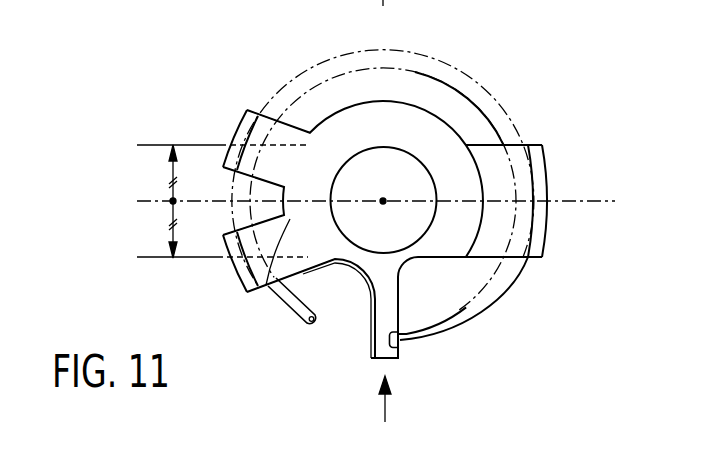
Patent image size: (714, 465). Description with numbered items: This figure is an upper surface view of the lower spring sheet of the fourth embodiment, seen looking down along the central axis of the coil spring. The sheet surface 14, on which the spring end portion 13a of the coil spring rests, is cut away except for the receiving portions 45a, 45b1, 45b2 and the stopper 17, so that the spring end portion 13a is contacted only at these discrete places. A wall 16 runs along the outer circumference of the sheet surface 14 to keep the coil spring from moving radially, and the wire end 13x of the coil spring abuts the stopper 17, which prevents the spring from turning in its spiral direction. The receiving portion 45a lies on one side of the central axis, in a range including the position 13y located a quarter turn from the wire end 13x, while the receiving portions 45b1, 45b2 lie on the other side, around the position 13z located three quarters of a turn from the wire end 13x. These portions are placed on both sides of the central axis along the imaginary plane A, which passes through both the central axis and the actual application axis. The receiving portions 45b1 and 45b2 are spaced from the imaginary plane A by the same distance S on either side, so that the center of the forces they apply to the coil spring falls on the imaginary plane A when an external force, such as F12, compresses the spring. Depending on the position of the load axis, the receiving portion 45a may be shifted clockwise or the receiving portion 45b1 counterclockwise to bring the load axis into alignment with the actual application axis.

The spring end portion 13a is at (453, 73).
The wire end 13x is at (413, 343).
The position away from the wire end by 0.25 turns 13y is at (533, 193).
The position away from the wire end by 0.75 turns 13z is at (222, 203).
The sheet surface 14 is at (283, 180).
The wall 16 is at (237, 133).
The stopper 17 is at (390, 300).
The receiving portion 45a is at (532, 217).
The receiving portion 45b1 is at (277, 137).
The receiving portion 45b2 is at (268, 288).
The imaginary plane A is at (592, 198).
The spiral S is at (162, 201).
The force F12 is at (385, 413).